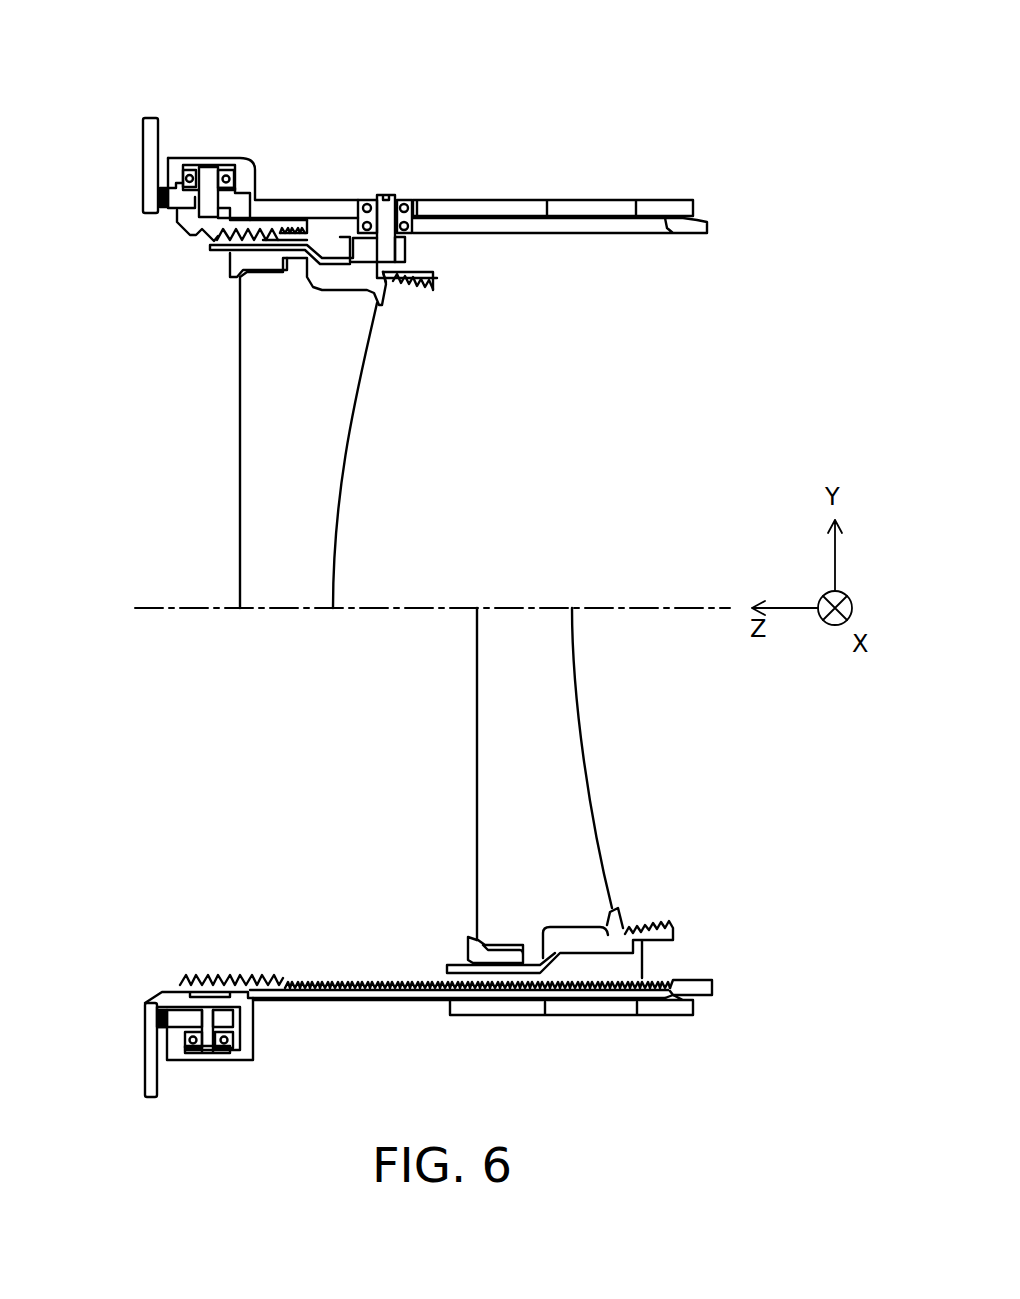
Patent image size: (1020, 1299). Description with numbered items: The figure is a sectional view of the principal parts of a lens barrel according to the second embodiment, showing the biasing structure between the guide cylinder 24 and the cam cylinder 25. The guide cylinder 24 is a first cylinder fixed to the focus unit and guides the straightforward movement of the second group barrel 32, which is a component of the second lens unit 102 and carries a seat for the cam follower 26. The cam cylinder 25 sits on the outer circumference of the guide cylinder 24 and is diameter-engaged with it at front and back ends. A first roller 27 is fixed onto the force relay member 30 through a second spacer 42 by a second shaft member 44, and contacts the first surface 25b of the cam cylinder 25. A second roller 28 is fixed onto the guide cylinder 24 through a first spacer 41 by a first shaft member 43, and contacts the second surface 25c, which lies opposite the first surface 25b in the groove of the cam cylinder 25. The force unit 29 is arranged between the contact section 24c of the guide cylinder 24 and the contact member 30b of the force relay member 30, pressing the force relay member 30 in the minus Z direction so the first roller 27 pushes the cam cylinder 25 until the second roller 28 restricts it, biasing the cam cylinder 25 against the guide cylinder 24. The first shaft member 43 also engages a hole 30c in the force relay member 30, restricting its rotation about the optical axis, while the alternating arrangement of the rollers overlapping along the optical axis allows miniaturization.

The guide cylinder 24 is at (154, 118).
The contact section 24c is at (170, 158).
The cam cylinder 25 is at (520, 199).
The first surface 25b is at (232, 1045).
The second surface 25c is at (287, 200).
The cam follower 26 is at (392, 194).
The first roller 27 is at (220, 1022).
The second roller 28 is at (206, 213).
The force unit 29 is at (187, 176).
The force relay member 30 is at (198, 190).
The contact member 30b is at (190, 203).
The hole 30c is at (352, 198).
The second group barrel 32 is at (393, 298).
The first spacer 41 is at (220, 238).
The second spacer 42 is at (190, 1023).
The first shaft member 43 is at (218, 250).
The second shaft member 44 is at (210, 1048).
The second lens unit 102 is at (353, 335).